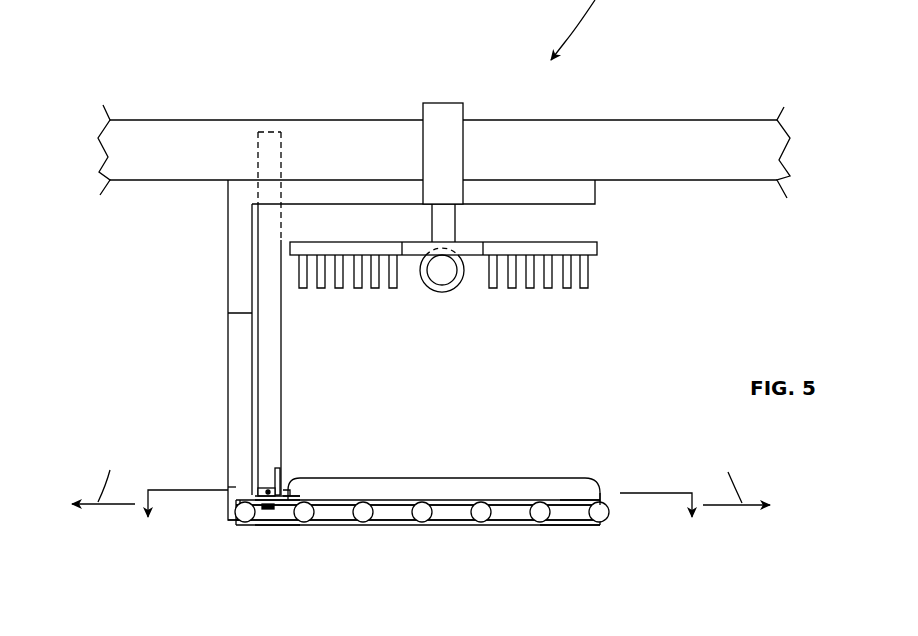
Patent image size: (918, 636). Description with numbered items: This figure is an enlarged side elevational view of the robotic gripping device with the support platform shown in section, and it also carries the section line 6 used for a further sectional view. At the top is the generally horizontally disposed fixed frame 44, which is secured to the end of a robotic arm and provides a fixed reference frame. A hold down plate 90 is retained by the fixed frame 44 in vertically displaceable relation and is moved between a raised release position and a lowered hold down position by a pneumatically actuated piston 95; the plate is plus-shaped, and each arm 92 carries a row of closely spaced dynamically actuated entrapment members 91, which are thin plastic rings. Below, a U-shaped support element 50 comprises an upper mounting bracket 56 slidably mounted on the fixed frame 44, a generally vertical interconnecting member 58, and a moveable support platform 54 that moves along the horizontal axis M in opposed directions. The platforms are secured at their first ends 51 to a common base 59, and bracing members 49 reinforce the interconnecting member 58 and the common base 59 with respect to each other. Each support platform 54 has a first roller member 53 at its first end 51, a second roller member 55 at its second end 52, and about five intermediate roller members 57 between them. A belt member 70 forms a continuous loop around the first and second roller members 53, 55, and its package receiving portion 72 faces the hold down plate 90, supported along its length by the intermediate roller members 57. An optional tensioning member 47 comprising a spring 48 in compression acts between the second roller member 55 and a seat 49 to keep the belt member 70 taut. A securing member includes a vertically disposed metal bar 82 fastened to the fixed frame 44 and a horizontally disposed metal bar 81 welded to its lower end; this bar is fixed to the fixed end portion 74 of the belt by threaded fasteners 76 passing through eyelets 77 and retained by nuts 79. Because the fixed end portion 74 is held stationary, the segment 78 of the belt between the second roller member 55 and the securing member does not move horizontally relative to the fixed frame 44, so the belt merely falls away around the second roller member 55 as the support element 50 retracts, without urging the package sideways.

The fixed frame 44 is at (160, 119).
The tensioning member 47 is at (439, 495).
The spring 48 is at (598, 497).
The bracing member 49 is at (228, 412).
The U-shaped support element 50 is at (121, 340).
The first end 51 is at (268, 525).
The second end 52 is at (570, 525).
The first roller member 53 is at (247, 525).
The support platform 54 is at (600, 498).
The second roller member 55 is at (602, 517).
The upper mounting bracket 56 is at (595, 193).
The intermediate roller member 57 is at (363, 523).
The interconnecting member 58 is at (228, 268).
The common base 59 is at (227, 505).
The belt member 70 is at (393, 525).
The package receiving portion 72 is at (440, 478).
The fixed end portion 74 is at (275, 515).
The threaded fastener 76 is at (268, 492).
The eyelet 77 is at (270, 492).
The segment 78 is at (287, 493).
The nut 79 is at (265, 523).
The horizontally disposed metal bar 81 is at (278, 468).
The vertically disposed metal bar 82 is at (282, 392).
The hold down plate 90 is at (578, 242).
The dynamically actuated entrapment member 91 is at (590, 274).
The arm 92 is at (335, 242).
The pneumatically actuated piston 95 is at (463, 150).
The section line 6- 6 is at (421, 520).